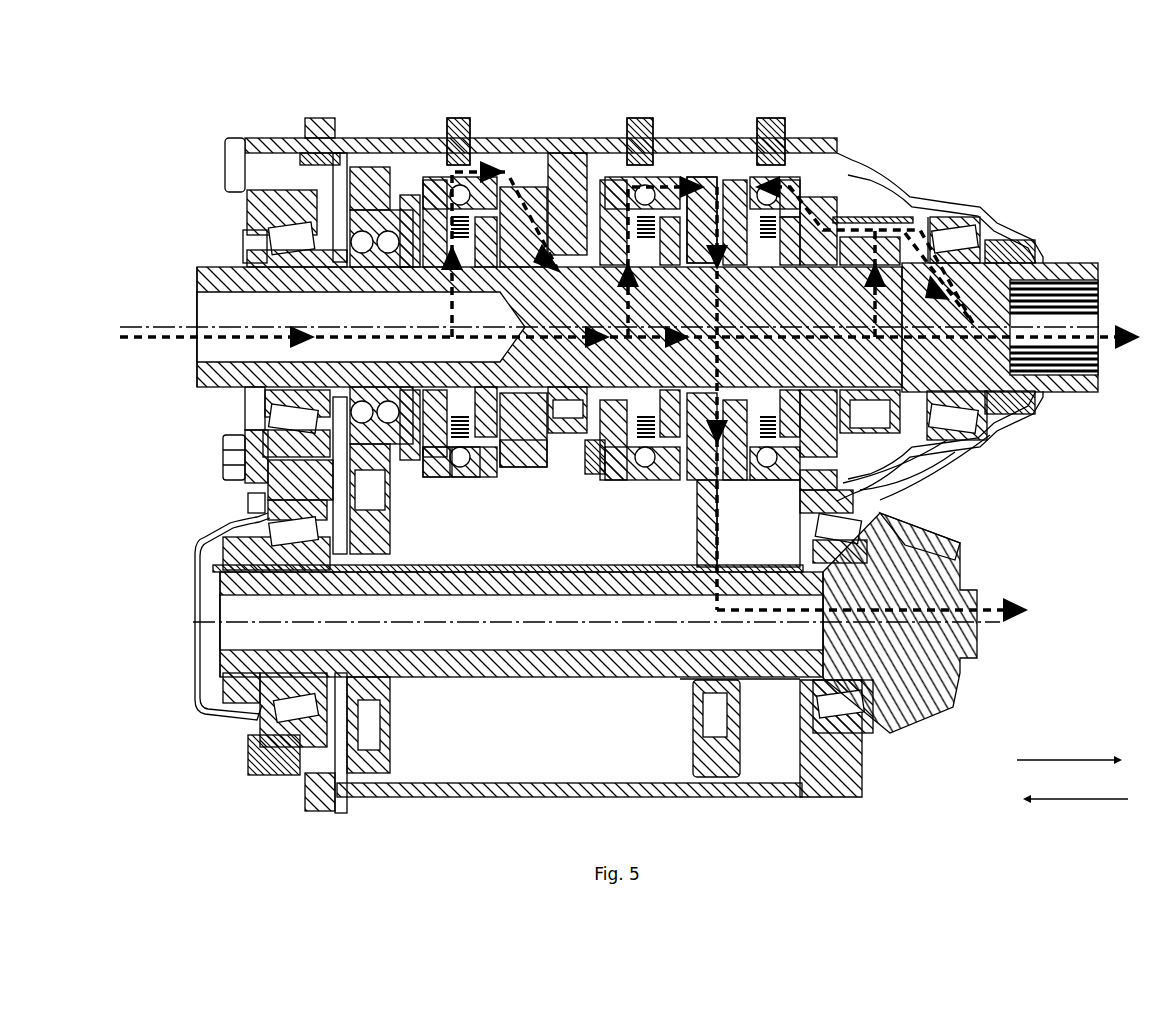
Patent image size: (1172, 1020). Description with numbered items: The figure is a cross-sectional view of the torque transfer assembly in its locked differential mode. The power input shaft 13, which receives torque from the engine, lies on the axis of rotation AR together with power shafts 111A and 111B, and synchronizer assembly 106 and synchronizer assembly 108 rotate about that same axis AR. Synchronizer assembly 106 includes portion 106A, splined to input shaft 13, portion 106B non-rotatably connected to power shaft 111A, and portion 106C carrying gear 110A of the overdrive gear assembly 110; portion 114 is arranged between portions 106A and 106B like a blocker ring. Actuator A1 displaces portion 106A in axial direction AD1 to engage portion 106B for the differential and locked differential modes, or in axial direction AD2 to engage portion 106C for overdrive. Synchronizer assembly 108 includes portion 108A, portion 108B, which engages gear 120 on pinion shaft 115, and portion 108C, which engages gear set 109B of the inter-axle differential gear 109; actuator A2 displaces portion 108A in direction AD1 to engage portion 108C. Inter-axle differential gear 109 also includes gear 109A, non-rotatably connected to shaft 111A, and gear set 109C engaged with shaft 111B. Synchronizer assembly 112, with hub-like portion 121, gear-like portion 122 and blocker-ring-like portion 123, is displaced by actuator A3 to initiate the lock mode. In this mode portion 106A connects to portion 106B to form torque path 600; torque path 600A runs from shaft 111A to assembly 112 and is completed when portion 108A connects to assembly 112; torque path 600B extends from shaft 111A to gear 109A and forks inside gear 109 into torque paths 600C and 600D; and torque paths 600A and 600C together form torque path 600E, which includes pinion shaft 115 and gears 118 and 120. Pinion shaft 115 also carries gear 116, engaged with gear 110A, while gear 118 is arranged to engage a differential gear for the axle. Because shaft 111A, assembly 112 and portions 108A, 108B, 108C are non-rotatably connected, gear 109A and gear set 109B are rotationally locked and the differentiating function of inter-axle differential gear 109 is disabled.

The power input shaft 13 is at (228, 293).
The synchronizer assembly 106 is at (430, 124).
The portion 106A is at (463, 477).
The portion 106B is at (520, 467).
The portion 106C is at (458, 477).
The synchronizer assembly 108 is at (750, 126).
The portion 108A is at (790, 192).
The portion 108B is at (738, 205).
The portion 108C is at (878, 210).
The inter-axle differential gear 109 is at (912, 205).
The gear 109A is at (960, 458).
The gear set 109B is at (882, 467).
The gear set 109C is at (905, 463).
The overdrive gear assembly 110 is at (227, 192).
The gear 110A is at (330, 208).
The power shaft 111A is at (985, 270).
The power shaft 111B is at (1060, 262).
The synchronizer assembly 112 is at (600, 126).
The portion 114 is at (487, 178).
The pinion shaft 115 is at (625, 646).
The gear 116 is at (248, 500).
The gear 118 is at (912, 688).
The gear 120 is at (745, 537).
The portion 121 is at (610, 450).
The portion 122 is at (698, 455).
The portion 123 is at (692, 448).
The torque path 600 is at (601, 337).
The torque path 600A is at (655, 180).
The torque path 600B is at (975, 432).
The torque path 600C is at (790, 172).
The torque path 600D is at (1137, 323).
The torque path 600E is at (900, 610).
The actuator A1 is at (459, 118).
The actuator A2 is at (771, 118).
The actuator A3 is at (640, 118).
The axis of rotation AR is at (232, 268).
The axial direction AD1 is at (1053, 760).
The axial direction AD2 is at (1072, 799).